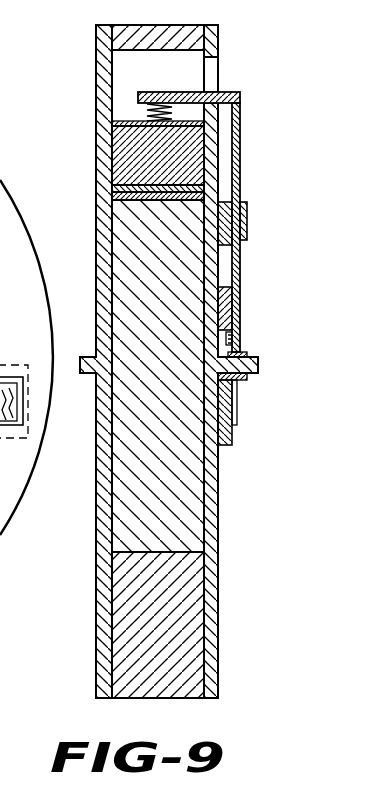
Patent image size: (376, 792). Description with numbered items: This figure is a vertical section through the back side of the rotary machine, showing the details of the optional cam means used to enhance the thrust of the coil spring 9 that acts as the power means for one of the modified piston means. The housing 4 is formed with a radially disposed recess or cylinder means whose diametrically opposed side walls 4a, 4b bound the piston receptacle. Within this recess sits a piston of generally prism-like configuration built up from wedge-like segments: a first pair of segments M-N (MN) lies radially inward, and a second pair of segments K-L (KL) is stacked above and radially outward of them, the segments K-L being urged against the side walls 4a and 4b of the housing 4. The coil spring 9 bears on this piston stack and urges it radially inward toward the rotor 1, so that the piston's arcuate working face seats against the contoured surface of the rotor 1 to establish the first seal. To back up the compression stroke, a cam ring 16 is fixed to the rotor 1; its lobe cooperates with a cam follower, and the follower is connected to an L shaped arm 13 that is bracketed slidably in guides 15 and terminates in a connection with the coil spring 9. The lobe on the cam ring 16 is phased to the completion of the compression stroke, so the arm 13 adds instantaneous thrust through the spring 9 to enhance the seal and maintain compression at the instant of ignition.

The rotor 1 is at (175, 512).
The housing 4 is at (150, 364).
The side wall of cylinder means 4a is at (97, 36).
The side wall of cylinder means 4b is at (218, 45).
The coil spring 9 is at (148, 111).
The L shaped arm 13 is at (243, 157).
The guides 15 is at (247, 223).
The cam ring 16 is at (235, 427).
The second pair of segments K-L KL is at (122, 183).
The first pair of segments M-N MN is at (115, 193).